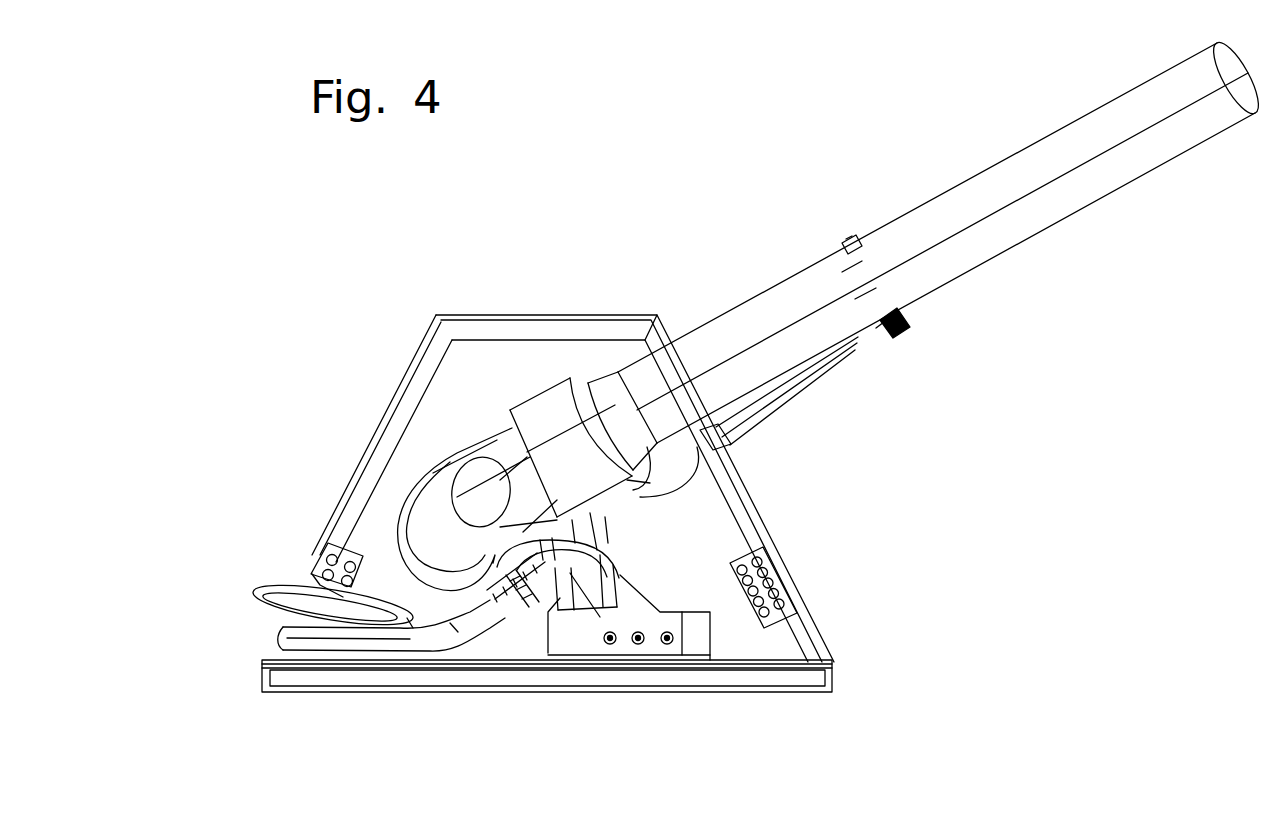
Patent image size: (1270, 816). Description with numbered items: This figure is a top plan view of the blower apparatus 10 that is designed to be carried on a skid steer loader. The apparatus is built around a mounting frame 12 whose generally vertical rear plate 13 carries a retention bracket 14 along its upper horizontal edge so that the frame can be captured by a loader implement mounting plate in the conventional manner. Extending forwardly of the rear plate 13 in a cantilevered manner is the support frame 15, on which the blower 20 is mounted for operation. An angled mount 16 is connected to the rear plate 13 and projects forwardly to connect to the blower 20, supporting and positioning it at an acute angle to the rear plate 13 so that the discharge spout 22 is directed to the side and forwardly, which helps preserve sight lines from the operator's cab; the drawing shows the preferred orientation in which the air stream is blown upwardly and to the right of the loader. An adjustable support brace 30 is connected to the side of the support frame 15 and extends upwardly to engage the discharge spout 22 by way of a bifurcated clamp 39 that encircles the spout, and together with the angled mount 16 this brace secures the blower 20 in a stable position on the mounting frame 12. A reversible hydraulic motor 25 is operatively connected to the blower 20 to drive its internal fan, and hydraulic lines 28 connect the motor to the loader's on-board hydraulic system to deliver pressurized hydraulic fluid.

The blower apparatus 10 is at (636, 234).
The mounting frame 12 is at (350, 512).
The rear plate 13 is at (783, 692).
The retention bracket 14 is at (388, 688).
The support frame 15 is at (780, 512).
The angled mount 16 is at (687, 650).
The blower 20 is at (514, 450).
The discharge spout 22 is at (1093, 133).
The hydraulic motor 25 is at (595, 574).
The hydraulic lines 28 is at (455, 620).
The adjustable support brace 30 is at (862, 427).
The clamp 39 is at (903, 330).